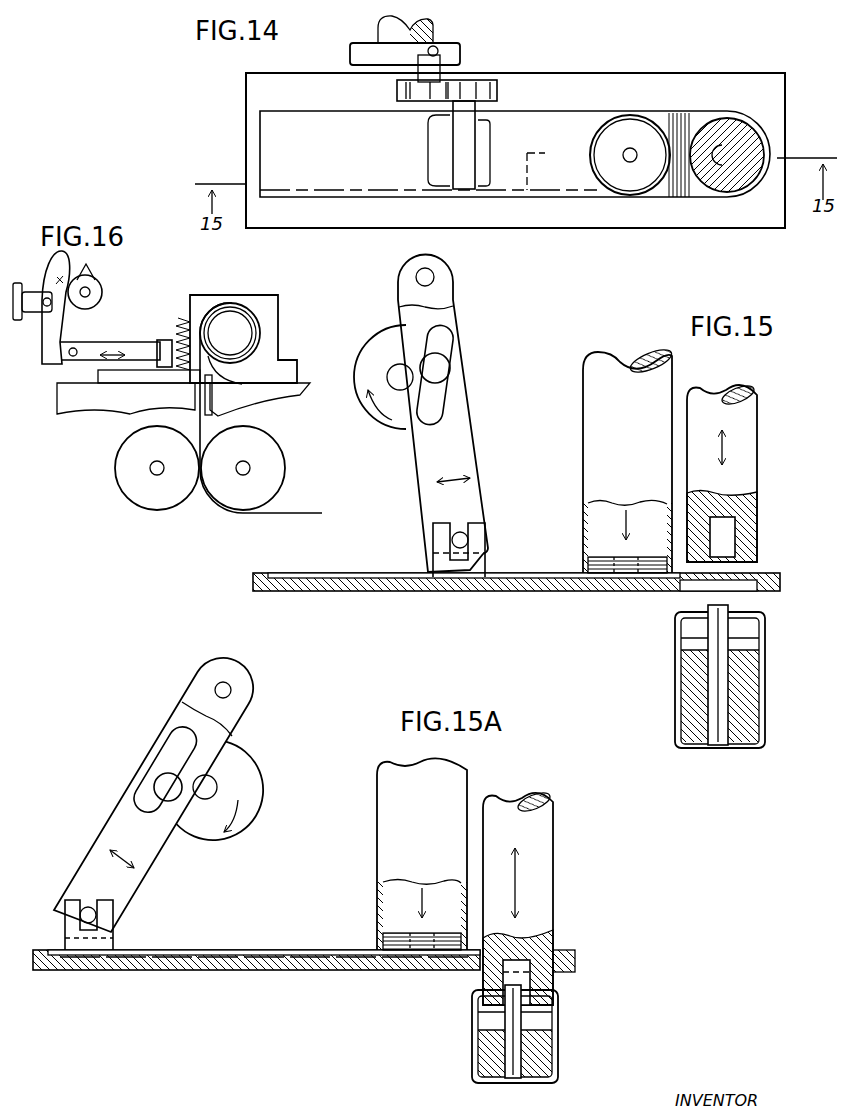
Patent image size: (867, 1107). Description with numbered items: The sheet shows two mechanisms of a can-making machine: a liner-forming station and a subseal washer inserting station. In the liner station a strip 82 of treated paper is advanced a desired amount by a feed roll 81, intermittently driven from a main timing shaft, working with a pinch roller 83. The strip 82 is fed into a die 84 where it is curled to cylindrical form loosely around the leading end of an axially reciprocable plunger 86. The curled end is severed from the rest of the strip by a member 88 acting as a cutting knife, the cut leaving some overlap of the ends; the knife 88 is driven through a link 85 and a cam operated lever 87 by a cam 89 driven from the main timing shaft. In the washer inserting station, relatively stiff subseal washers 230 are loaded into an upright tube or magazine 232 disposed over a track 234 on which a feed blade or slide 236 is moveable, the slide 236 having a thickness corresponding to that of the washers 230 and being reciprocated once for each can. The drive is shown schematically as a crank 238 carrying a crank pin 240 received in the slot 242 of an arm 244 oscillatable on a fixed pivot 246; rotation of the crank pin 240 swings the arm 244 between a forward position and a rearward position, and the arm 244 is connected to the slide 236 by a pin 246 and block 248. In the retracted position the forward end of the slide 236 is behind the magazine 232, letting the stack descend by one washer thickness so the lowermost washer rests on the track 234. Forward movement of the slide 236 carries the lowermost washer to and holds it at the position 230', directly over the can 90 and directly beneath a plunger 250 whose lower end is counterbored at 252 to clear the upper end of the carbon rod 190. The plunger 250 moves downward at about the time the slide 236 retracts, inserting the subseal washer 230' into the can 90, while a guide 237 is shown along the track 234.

In FIG. 16, the feed roll 81 is at (114, 463).
In FIG. 16, the strip 82 is at (197, 426).
In FIG. 16, the pinch roller 83 is at (286, 453).
In FIG. 16, the die 84 is at (280, 300).
In FIG. 16, the link 85 is at (126, 346).
In FIG. 16, the plunger 86 is at (244, 339).
In FIG. 16, the cam operated lever 87 is at (56, 325).
In FIG. 16, the member 88 is at (160, 340).
In FIG. 16, the cam 89 is at (95, 274).
In FIG. 15, the can 90 is at (767, 634).
In FIG. 15A, the can 90 is at (560, 1034).
In FIG. 15, the carbon rod 190 is at (732, 606).
In FIG. 15A, the carbon rod 190 is at (550, 1058).
In FIG. 14, the washers 230 is at (714, 145).
In FIG. 15, the washers 230 is at (627, 541).
In FIG. 15A, the washers 230 is at (422, 919).
In FIG. 15, the subseal washer position 230' is at (782, 566).
In FIG. 15A, the subseal washer position 230' is at (562, 983).
In FIG. 14, the magazine 232 is at (634, 125).
In FIG. 15, the magazine 232 is at (597, 458).
In FIG. 15A, the magazine 232 is at (393, 817).
In FIG. 14, the track 234 is at (350, 200).
In FIG. 15, the track 234 is at (608, 592).
In FIG. 15A, the track 234 is at (190, 971).
In FIG. 14, the slide 236 is at (565, 185).
In FIG. 15, the slide 236 is at (518, 580).
In FIG. 15A, the slide 236 is at (250, 950).
In FIG. 15A, the guide 237 is at (332, 950).
In FIG. 14, the crank 238 is at (462, 58).
In FIG. 15, the crank 238 is at (370, 410).
In FIG. 15A, the crank 238 is at (248, 790).
In FIG. 15, the crank pin 240 is at (451, 368).
In FIG. 15A, the crank pin 240 is at (158, 776).
In FIG. 15, the slot 242 is at (448, 336).
In FIG. 14, the arm 244 is at (498, 90).
In FIG. 15, the arm 244 is at (478, 426).
In FIG. 15A, the arm 244 is at (155, 868).
In FIG. 14, the pivot 246 is at (452, 130).
In FIG. 15, the pivot 246 is at (434, 277).
In FIG. 15A, the pivot 246 is at (231, 690).
In FIG. 14, the block 248 is at (492, 132).
In FIG. 15, the block 248 is at (487, 560).
In FIG. 15A, the block 248 is at (115, 938).
In FIG. 15, the plunger 250 is at (748, 473).
In FIG. 15A, the plunger 250 is at (540, 912).
In FIG. 15, the counterbore 252 is at (728, 538).